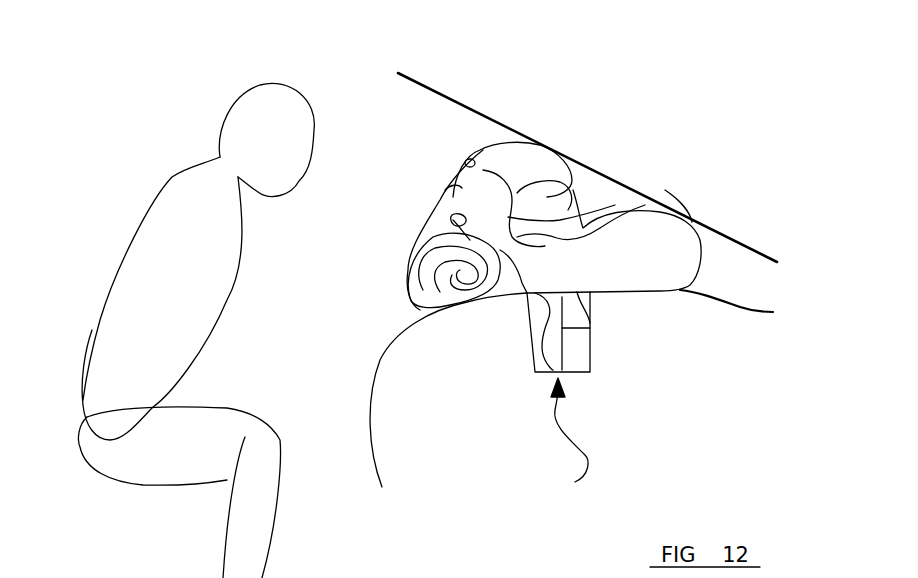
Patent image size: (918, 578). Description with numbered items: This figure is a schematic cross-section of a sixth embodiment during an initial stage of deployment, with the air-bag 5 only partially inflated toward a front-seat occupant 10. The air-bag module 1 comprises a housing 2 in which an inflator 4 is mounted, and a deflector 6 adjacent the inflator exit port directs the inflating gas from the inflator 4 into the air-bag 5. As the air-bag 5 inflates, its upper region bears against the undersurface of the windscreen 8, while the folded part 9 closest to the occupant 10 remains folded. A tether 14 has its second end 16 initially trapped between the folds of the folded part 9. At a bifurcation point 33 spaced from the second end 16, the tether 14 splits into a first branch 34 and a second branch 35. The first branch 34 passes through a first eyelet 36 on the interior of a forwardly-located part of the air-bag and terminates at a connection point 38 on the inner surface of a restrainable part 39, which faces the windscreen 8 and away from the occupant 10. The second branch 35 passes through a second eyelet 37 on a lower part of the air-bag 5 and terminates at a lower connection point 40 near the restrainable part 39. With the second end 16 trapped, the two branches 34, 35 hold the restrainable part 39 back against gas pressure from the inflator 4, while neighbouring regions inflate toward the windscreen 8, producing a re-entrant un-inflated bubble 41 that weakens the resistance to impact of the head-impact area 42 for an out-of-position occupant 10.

The air-bag module 1 is at (569, 436).
The housing 2 is at (533, 375).
The inflator 4 is at (592, 357).
The air-bag 5 is at (700, 268).
The deflector 6 is at (592, 323).
The windscreen 8 is at (723, 235).
The folded part 9 is at (404, 296).
The occupant 10 is at (133, 250).
The tether 14 is at (417, 247).
The second end 16 is at (528, 245).
The bifurcation point 33 is at (417, 210).
The first branch 34 is at (455, 205).
The second branch 35 is at (445, 212).
The first eyelet 36 is at (483, 155).
The second eyelet 37 is at (517, 293).
The connection point 38 is at (560, 218).
The restrainable part 39 is at (627, 230).
The connection point 40 is at (640, 227).
The un-inflated bubble 41 is at (597, 200).
The head-impact area 42 is at (528, 165).